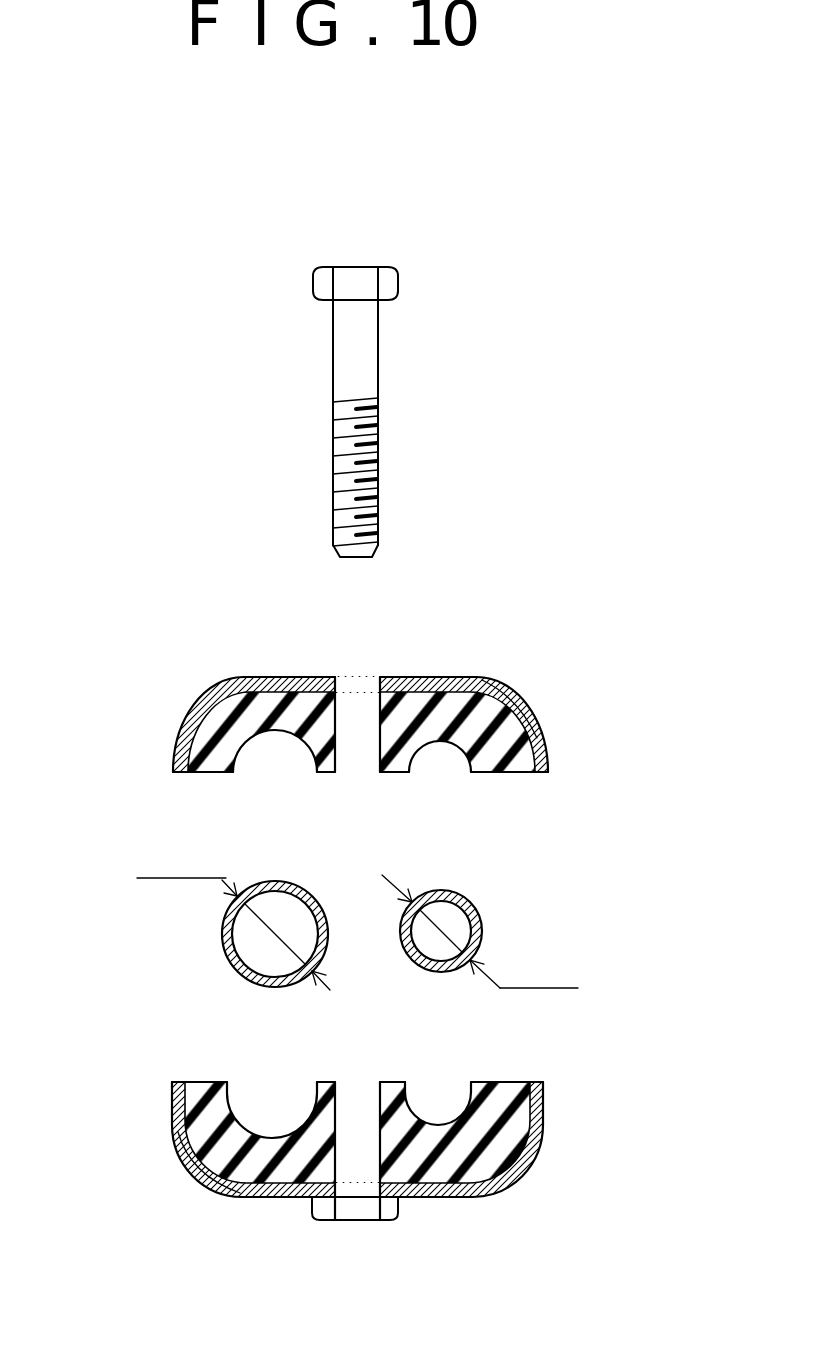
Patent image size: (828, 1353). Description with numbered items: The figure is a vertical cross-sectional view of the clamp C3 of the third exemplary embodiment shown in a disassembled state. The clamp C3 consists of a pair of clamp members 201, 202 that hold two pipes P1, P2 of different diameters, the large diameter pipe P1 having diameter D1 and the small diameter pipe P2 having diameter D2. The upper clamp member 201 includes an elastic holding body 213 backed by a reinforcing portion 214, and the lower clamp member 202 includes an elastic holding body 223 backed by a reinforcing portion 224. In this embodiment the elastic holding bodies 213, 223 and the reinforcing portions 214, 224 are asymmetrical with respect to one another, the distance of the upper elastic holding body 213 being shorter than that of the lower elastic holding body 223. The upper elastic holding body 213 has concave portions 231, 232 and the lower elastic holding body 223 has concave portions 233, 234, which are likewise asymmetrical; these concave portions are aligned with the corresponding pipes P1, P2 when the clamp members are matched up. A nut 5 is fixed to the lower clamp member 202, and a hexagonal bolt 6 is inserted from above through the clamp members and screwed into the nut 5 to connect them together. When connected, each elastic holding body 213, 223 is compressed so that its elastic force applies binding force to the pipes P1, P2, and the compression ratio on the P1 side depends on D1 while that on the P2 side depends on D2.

The hexagonal bolt 6 is at (382, 368).
The clamp member 201 is at (195, 698).
The reinforcing portion 214 is at (413, 676).
The elastic holding body 213 is at (502, 723).
The clamp C3 is at (373, 703).
The concave portion 231 is at (262, 742).
The concave portion 232 is at (440, 748).
The pipe P1 is at (222, 932).
The diameter of pipe P1 D1 is at (233, 913).
The pipe P2 is at (476, 907).
The diameter of pipe P2 D2 is at (480, 931).
The clamp member 202 is at (195, 1173).
The reinforcing portion 224 is at (462, 1188).
The elastic holding body 223 is at (482, 1150).
The concave portion 233 is at (250, 1135).
The concave portion 234 is at (446, 1127).
The nut 5 is at (387, 1208).